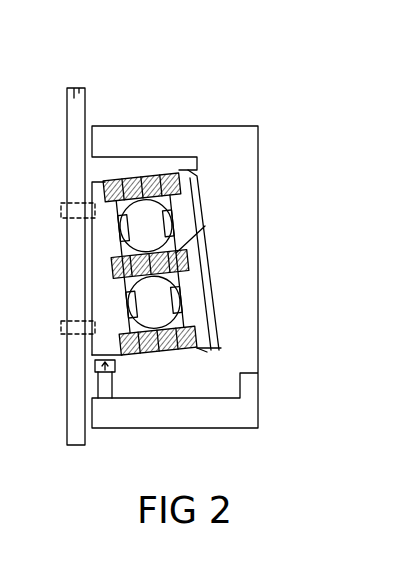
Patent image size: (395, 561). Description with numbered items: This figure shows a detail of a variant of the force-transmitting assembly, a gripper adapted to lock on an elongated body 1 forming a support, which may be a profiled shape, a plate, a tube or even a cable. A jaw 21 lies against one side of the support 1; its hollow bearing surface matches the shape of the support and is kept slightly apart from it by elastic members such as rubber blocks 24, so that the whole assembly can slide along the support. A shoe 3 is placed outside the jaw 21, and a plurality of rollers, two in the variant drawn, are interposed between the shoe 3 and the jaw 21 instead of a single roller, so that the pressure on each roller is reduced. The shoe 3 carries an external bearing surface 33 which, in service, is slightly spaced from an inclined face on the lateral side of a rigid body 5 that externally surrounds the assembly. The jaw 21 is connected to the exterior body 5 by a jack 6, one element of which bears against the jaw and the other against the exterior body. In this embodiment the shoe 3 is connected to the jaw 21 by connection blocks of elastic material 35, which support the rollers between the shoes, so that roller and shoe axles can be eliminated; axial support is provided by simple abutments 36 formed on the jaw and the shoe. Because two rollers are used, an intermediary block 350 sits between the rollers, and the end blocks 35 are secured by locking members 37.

The elongated body 1 is at (75, 105).
The shoe 3 is at (193, 280).
The rigid body 5 is at (243, 352).
The jack 6 is at (107, 390).
The jaw 21 is at (107, 343).
The rubber blocks 24 is at (60, 335).
The external bearing surface 33 is at (204, 232).
The connection blocks of elastic material 35 is at (120, 183).
The abutments 36 is at (155, 203).
The locking members 37 is at (192, 347).
The intermediary block 350 is at (201, 236).